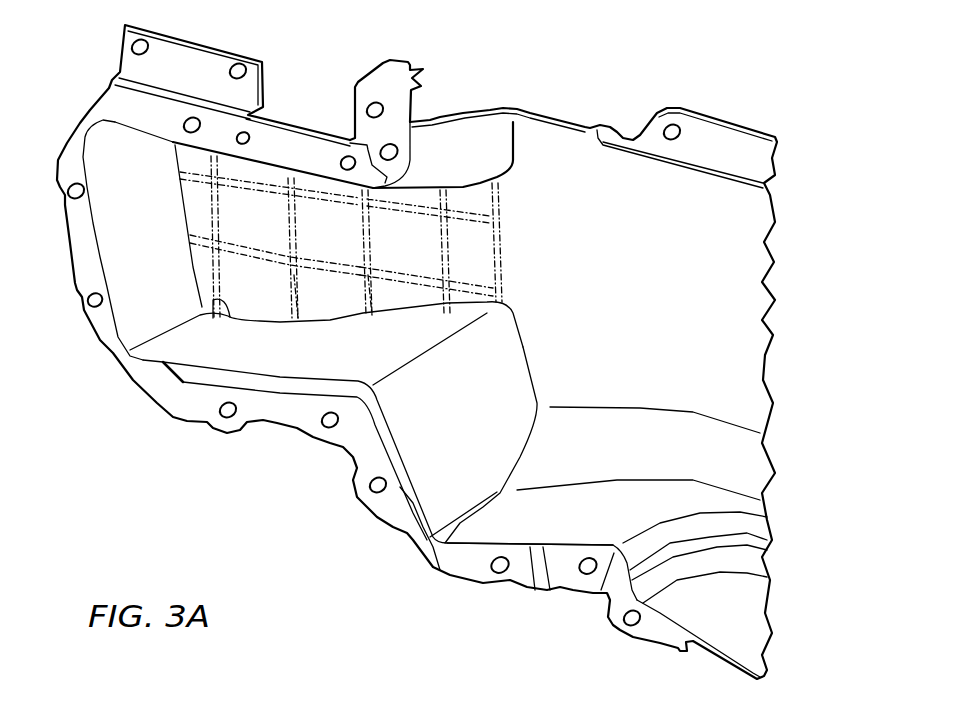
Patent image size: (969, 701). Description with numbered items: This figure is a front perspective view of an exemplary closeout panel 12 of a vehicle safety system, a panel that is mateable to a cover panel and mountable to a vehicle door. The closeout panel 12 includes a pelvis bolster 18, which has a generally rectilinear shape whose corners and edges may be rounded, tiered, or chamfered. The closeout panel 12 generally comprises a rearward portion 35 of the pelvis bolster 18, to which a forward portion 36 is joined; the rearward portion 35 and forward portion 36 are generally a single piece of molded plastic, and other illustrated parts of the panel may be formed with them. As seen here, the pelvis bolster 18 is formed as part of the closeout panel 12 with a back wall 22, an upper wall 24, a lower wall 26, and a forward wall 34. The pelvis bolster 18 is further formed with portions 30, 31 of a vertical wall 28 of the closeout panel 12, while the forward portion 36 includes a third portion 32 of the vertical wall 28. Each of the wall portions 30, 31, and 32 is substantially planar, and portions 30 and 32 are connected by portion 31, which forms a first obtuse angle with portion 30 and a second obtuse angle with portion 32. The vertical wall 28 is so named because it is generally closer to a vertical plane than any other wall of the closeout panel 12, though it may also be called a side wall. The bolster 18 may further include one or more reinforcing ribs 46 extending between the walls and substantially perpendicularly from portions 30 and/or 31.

The closeout panel 12 is at (511, 576).
The pelvis bolster 18 is at (229, 317).
The back wall 22 is at (148, 259).
The upper wall 24 is at (173, 140).
The lower wall 26 is at (274, 357).
The vertical wall 28 is at (320, 262).
The portion of the vertical wall 30 is at (248, 229).
The portion of the vertical wall 31 is at (416, 256).
The third portion of the vertical wall 32 is at (653, 300).
The forward wall 34 is at (447, 477).
The rearward portion 35 is at (302, 364).
The forward portion 36 is at (476, 526).
The reinforcing rib 46 is at (256, 190).